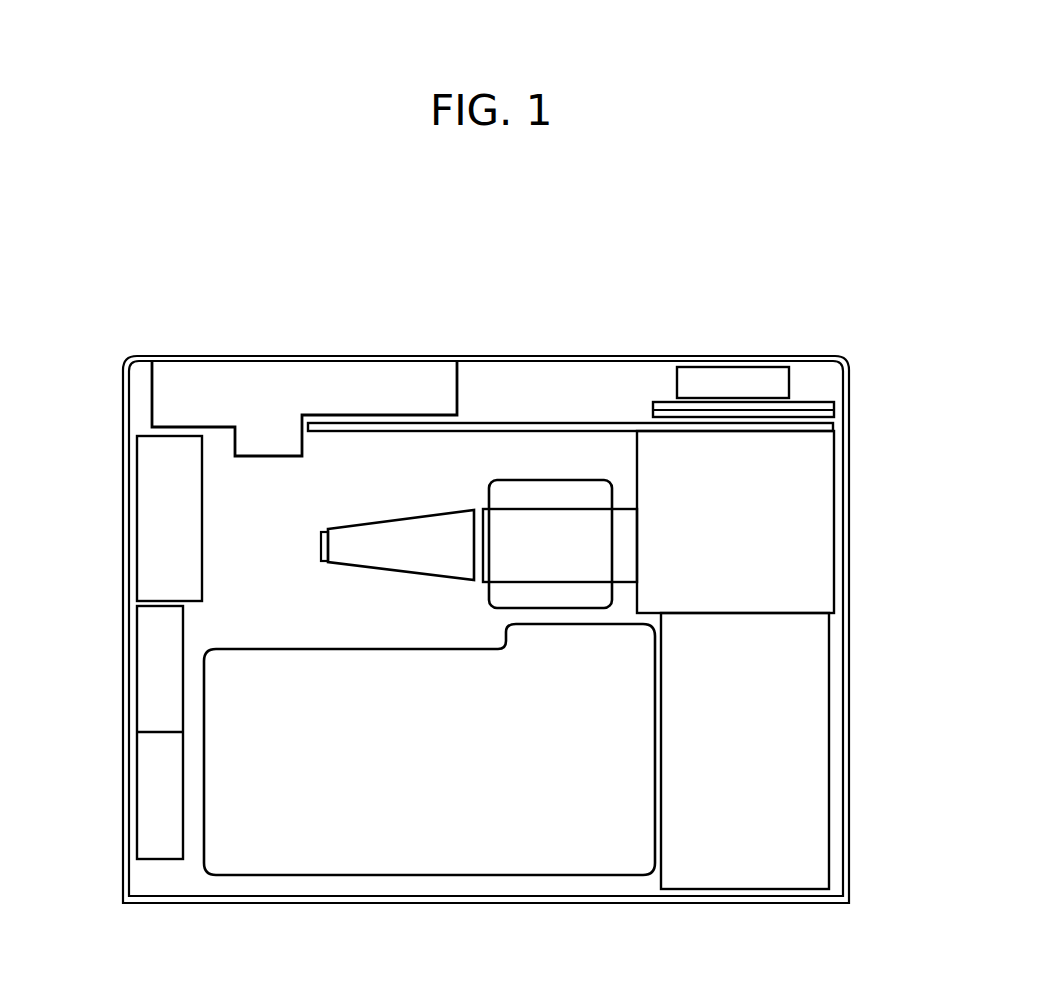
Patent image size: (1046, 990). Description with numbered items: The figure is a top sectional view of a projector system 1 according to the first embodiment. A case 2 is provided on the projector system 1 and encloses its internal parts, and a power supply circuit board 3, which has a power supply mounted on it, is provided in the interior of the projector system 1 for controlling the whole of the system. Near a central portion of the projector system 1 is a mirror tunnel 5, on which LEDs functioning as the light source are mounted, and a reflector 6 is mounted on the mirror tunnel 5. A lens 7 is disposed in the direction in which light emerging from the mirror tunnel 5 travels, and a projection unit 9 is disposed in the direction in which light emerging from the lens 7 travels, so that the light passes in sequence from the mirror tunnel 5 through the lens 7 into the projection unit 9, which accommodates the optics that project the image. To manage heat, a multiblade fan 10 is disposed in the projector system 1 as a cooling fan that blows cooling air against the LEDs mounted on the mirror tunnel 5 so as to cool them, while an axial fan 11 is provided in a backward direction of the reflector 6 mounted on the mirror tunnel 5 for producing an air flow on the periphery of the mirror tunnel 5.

The projector system 1 is at (476, 278).
The case 2 is at (610, 903).
The power supply circuit board 3 is at (500, 875).
The mirror tunnel 5 is at (398, 520).
The reflector 6 is at (326, 532).
The lens 7 is at (622, 509).
The projection unit 9 is at (892, 526).
The multiblade fan 10 is at (527, 480).
The axial fan 11 is at (137, 494).